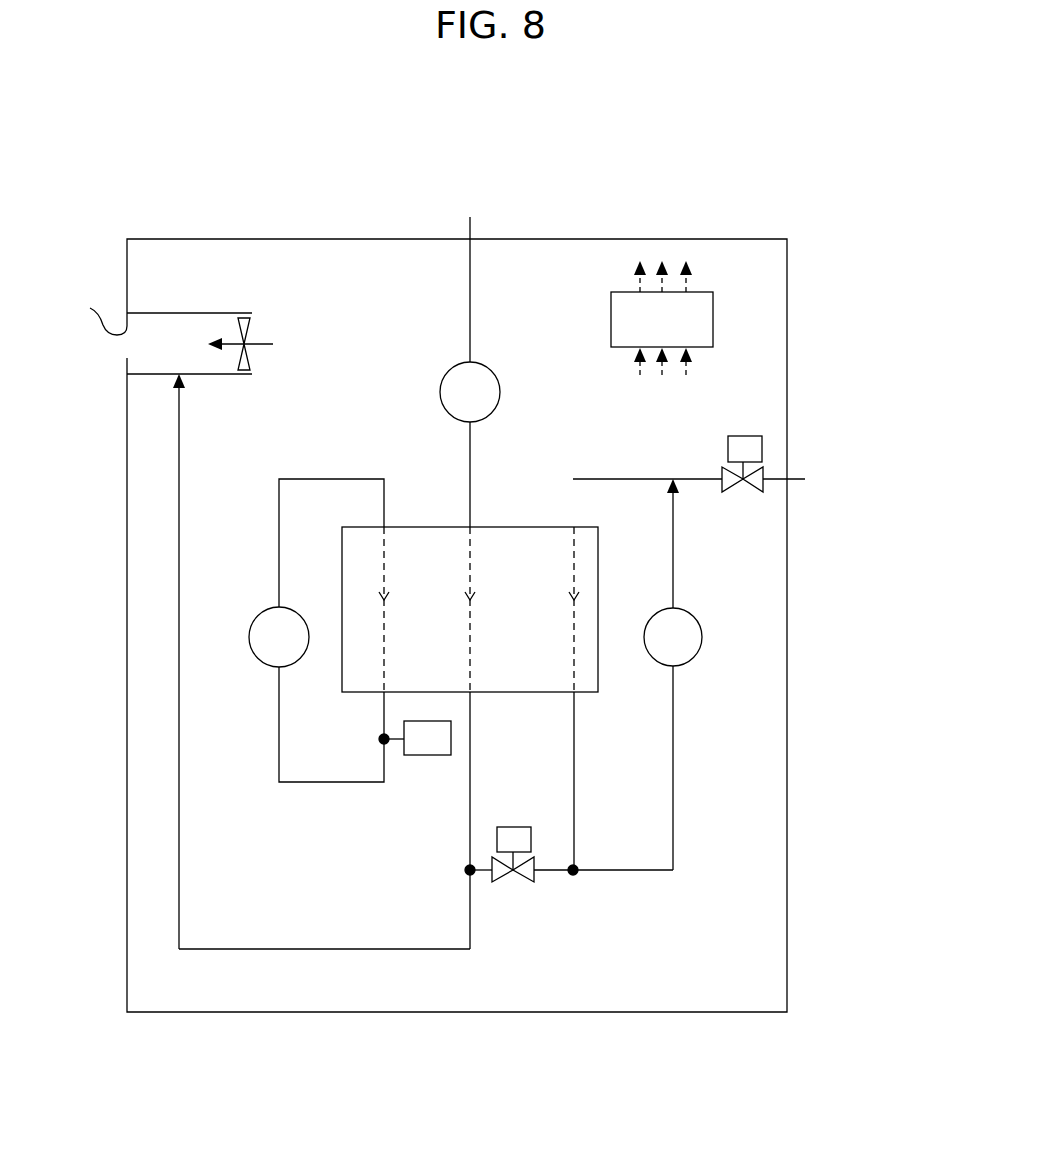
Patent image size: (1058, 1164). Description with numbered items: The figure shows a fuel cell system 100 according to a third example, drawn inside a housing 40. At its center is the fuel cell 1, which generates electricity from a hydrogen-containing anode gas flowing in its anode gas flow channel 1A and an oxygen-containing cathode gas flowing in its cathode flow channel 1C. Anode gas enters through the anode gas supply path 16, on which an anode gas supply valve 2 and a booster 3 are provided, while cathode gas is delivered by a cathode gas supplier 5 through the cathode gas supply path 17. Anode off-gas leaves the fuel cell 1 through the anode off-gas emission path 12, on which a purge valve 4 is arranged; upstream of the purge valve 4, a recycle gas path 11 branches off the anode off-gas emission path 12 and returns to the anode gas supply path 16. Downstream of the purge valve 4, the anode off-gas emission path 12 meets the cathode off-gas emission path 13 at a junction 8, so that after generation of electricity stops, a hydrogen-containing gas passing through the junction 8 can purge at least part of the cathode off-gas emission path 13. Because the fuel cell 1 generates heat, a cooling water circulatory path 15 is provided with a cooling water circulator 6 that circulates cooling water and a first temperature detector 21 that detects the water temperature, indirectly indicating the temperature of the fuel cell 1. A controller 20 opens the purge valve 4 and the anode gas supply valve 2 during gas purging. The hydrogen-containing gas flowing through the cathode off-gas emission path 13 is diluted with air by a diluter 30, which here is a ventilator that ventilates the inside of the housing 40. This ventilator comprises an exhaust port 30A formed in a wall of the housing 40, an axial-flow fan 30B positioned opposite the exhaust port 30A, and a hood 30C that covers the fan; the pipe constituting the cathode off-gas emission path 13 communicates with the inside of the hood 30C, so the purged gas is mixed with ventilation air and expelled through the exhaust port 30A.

The fuel cell system 100 is at (487, 158).
The fuel cell 1 is at (607, 549).
The anode gas flow channel 1A is at (574, 552).
The cathode 1C is at (470, 552).
The anode gas supply valve 2 is at (738, 436).
The booster 3 is at (680, 649).
The purge valve 4 is at (510, 827).
The cathode gas supplier 5 is at (477, 404).
The cooling water circulator 6 is at (286, 649).
The junction 8 is at (472, 873).
The recycle gas path 11 is at (673, 793).
The anode off-gas emission path 12 is at (573, 845).
The cathode off-gas emission path 13 is at (470, 850).
The cooling water circulatory path 15 is at (279, 748).
The anode gas supply path 16 is at (610, 479).
The cathode gas supply path 17 is at (470, 350).
The controller 20 is at (676, 338).
The first temperature detector 21 is at (442, 751).
The diluter 30 is at (177, 311).
The exhaust port 30A is at (94, 307).
The axial-flow fan 30B is at (247, 330).
The hood 30C is at (214, 375).
The housing 40 is at (127, 522).